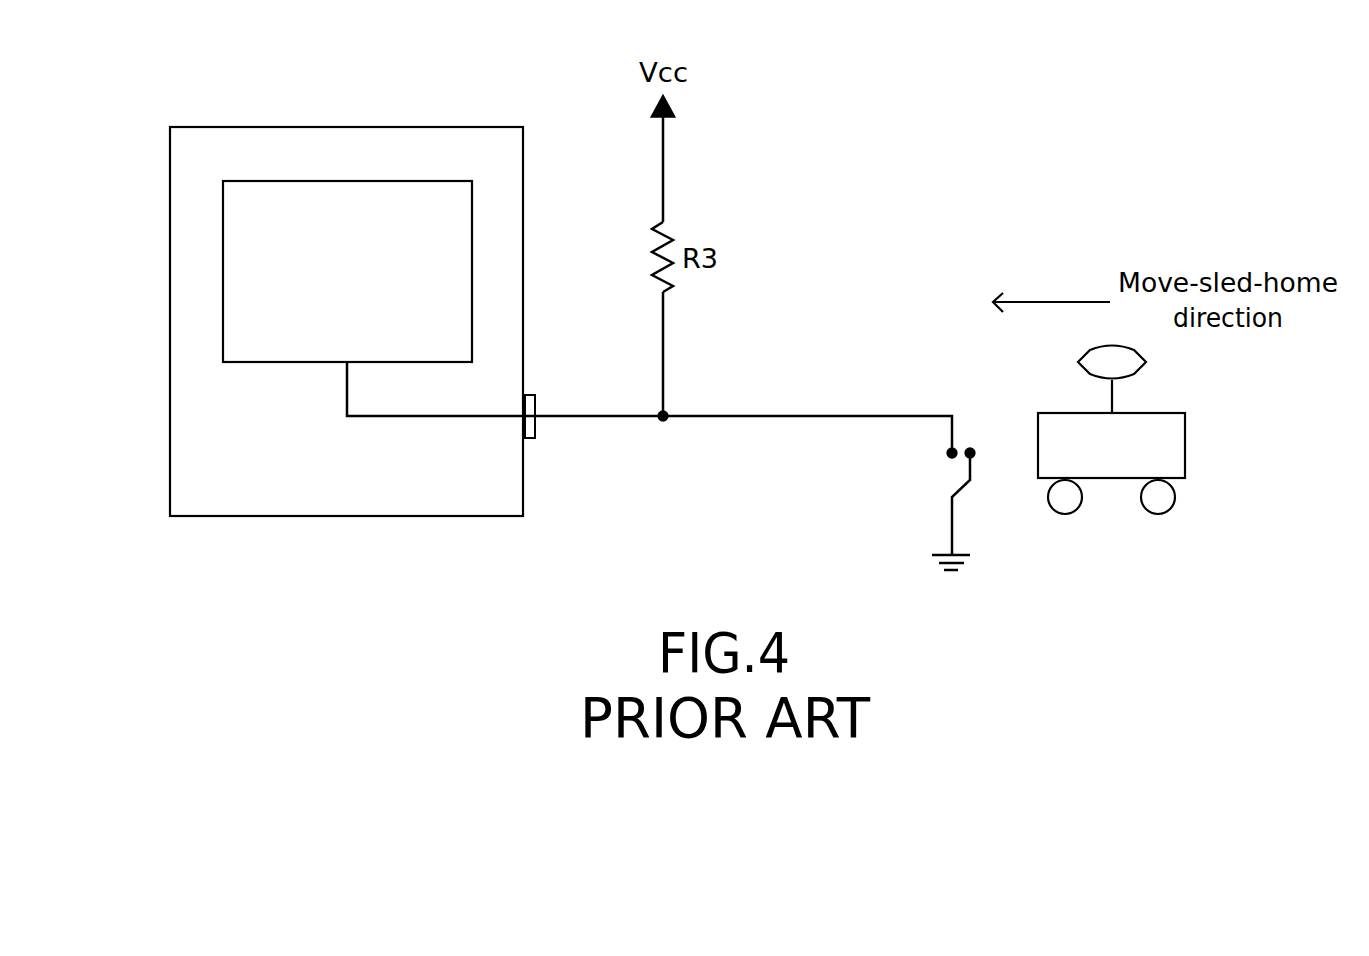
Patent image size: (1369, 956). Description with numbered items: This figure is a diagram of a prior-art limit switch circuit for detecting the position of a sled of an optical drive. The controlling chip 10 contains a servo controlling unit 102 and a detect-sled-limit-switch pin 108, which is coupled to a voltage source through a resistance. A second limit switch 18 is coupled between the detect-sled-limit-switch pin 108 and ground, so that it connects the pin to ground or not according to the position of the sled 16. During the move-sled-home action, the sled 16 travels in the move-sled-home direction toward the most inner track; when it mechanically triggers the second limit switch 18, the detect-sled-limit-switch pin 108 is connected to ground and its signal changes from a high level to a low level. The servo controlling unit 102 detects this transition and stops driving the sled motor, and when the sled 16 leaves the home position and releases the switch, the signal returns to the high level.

The controlling chip 10 is at (193, 398).
The servo controlling unit 102 is at (400, 195).
The detect-sled-limit-switch pin 108 is at (530, 392).
The second limit switch 18 is at (945, 472).
The sled 16 is at (1145, 432).